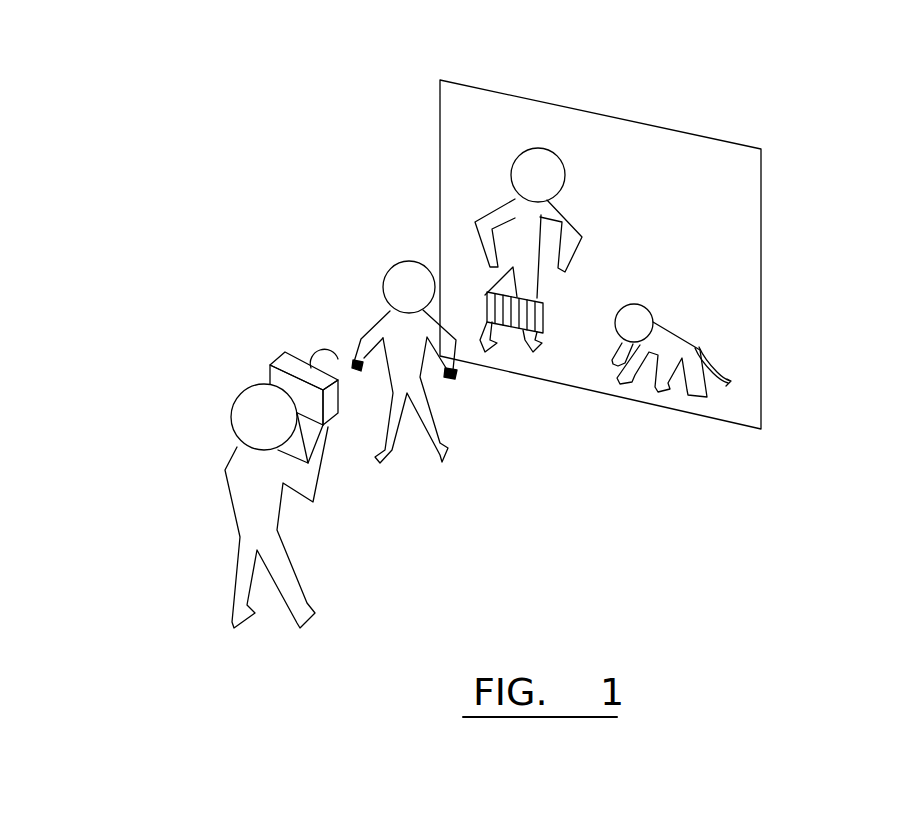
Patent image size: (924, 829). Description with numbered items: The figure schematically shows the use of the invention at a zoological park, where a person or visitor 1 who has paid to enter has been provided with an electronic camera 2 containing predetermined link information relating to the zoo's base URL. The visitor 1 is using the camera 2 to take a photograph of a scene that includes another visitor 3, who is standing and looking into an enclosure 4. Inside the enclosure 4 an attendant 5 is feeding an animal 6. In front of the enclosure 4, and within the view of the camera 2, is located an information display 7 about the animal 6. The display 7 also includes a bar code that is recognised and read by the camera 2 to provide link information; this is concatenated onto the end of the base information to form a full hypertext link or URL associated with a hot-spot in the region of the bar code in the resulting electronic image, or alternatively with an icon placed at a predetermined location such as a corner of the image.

The person (visitor) 1 is at (227, 429).
The electronic camera 2 is at (276, 328).
The another visitor 3 is at (384, 304).
The enclosure 4 is at (665, 254).
The attendant 5 is at (565, 249).
The animal 6 is at (671, 318).
The information display 7 is at (571, 278).